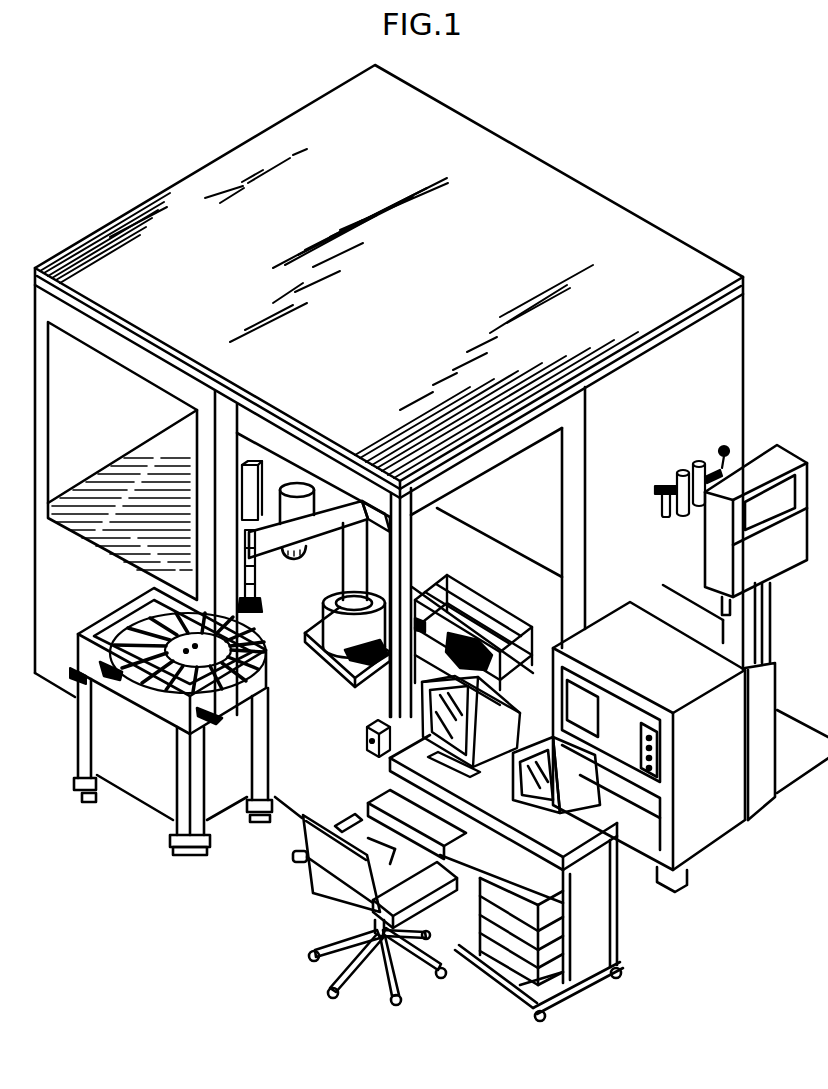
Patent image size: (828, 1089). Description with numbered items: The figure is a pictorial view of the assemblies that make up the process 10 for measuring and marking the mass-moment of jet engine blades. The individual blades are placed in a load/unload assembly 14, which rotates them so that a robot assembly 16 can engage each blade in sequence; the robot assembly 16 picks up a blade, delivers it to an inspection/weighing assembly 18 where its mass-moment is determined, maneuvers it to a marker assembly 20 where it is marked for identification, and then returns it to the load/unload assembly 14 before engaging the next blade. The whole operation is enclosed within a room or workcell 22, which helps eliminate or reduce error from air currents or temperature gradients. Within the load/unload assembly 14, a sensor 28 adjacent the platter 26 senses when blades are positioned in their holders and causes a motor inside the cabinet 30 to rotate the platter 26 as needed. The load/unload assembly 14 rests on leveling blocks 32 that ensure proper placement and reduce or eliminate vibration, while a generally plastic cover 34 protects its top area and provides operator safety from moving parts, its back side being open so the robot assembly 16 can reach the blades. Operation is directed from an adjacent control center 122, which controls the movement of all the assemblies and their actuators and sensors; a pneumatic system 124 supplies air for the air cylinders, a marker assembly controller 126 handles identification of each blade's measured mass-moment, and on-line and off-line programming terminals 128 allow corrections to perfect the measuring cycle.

The process 10 is at (431, 442).
The load/unload assembly 14 is at (132, 808).
The robot assembly 16 is at (347, 562).
The inspection/weighing assembly 18 is at (480, 598).
The marker assembly 20 is at (330, 675).
The room or workcell 22 is at (227, 152).
The platter 26 is at (170, 690).
The sensor 28 is at (72, 697).
The cabinet 30 is at (226, 808).
The leveling blocks 32 is at (193, 855).
The cover 34 is at (128, 607).
The control center 122 is at (704, 838).
The pneumatic system 124 is at (673, 473).
The marker assembly controller 126 is at (810, 503).
The programming terminals 128 is at (573, 808).